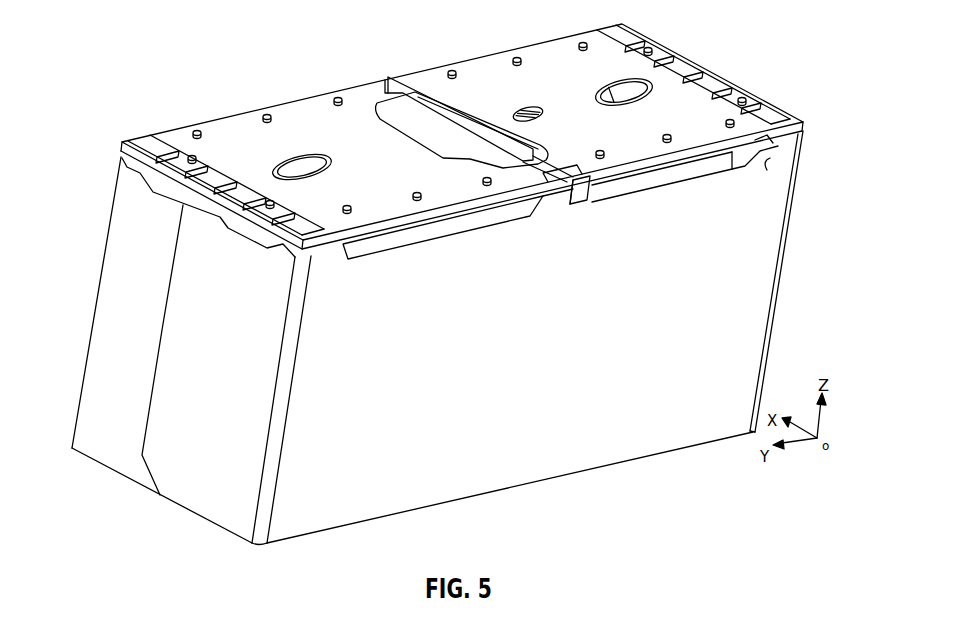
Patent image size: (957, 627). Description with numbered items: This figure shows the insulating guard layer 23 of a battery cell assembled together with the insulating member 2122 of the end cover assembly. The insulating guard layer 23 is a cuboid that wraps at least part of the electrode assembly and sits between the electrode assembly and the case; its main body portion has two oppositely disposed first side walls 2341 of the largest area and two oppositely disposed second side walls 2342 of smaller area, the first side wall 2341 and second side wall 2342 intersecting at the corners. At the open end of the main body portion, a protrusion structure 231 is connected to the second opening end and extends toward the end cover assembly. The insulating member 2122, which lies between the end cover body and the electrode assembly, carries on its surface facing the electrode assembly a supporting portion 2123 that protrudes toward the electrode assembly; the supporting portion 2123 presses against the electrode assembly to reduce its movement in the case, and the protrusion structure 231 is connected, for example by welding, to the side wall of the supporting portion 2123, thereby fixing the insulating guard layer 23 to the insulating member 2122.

The insulating guard layer 23 is at (782, 267).
The insulating member 2122 is at (565, 75).
The supporting portion 2123 is at (253, 222).
The protrusion structure 231 is at (198, 212).
The first side wall 2341 is at (708, 350).
The second side wall 2342 is at (143, 297).